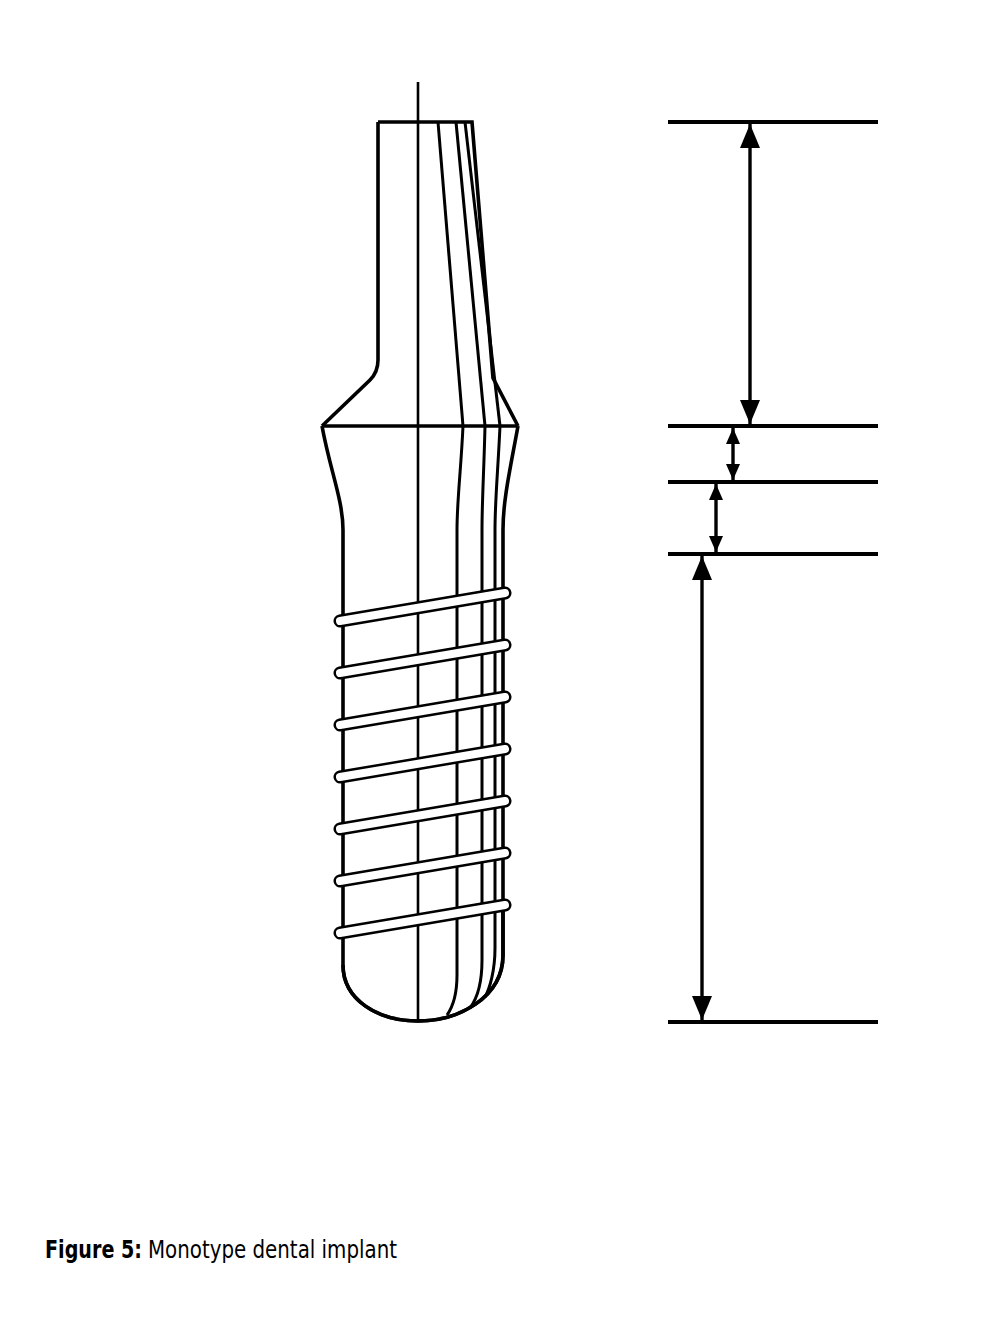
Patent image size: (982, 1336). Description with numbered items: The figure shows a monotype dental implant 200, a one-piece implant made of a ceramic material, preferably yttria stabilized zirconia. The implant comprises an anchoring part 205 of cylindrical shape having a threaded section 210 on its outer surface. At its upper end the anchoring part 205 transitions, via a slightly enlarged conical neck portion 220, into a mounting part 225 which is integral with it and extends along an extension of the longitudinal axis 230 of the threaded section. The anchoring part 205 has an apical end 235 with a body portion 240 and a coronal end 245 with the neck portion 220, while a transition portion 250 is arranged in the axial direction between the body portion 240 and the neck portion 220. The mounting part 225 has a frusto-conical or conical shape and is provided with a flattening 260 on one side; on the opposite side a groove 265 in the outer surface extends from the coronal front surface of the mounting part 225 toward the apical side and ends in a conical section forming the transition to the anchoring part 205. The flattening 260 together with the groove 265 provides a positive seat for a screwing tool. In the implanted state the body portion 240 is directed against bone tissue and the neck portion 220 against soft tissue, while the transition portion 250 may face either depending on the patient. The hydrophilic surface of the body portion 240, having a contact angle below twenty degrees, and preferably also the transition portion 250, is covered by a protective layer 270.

The monotype dental implant 200 is at (282, 652).
The anchoring part 205 is at (442, 836).
The threaded section 210 is at (460, 752).
The neck portion 220 is at (773, 460).
The mounting part 225 is at (773, 274).
The longitudinal axis 230 is at (413, 510).
The apical end 235 is at (427, 1023).
The body portion 240 is at (773, 789).
The coronal end 245 is at (322, 427).
The transition portion 250 is at (773, 519).
The flattening 260 is at (377, 268).
The groove 265 is at (480, 267).
The protective layer 270 is at (503, 952).